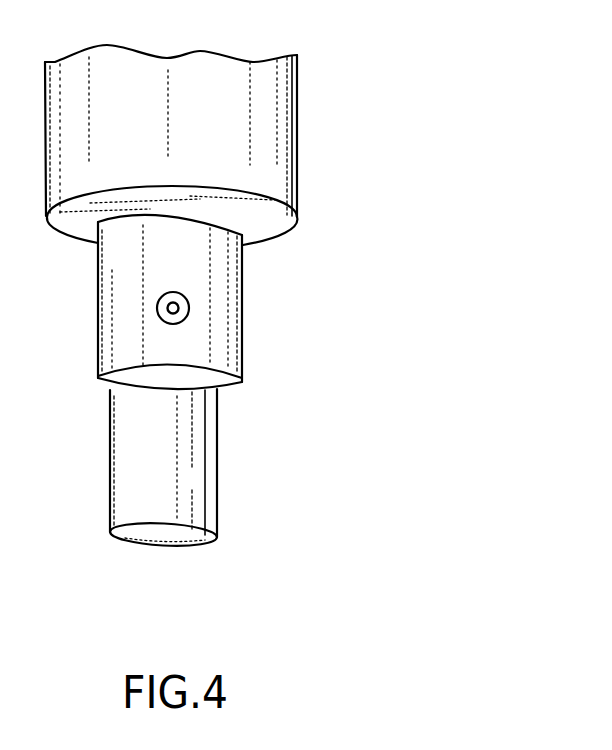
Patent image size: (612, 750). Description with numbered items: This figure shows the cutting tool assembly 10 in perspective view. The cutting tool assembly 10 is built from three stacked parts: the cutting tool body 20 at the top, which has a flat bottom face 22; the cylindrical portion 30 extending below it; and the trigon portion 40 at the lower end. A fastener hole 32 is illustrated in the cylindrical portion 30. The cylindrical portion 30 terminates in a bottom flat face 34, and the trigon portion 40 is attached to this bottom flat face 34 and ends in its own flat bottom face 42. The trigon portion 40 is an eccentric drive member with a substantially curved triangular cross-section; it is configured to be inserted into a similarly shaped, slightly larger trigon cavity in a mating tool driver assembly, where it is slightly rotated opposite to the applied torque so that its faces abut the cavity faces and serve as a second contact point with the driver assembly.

The cutting tool assembly 10 is at (490, 88).
The cutting tool body 20 is at (287, 160).
The flat bottom face 22 is at (280, 222).
The cylindrical portion 30 is at (235, 327).
The fastener hole 32 is at (158, 312).
The bottom flat face 34 is at (240, 388).
The trigon portion 40 is at (217, 498).
The flat bottom face 42 is at (193, 545).